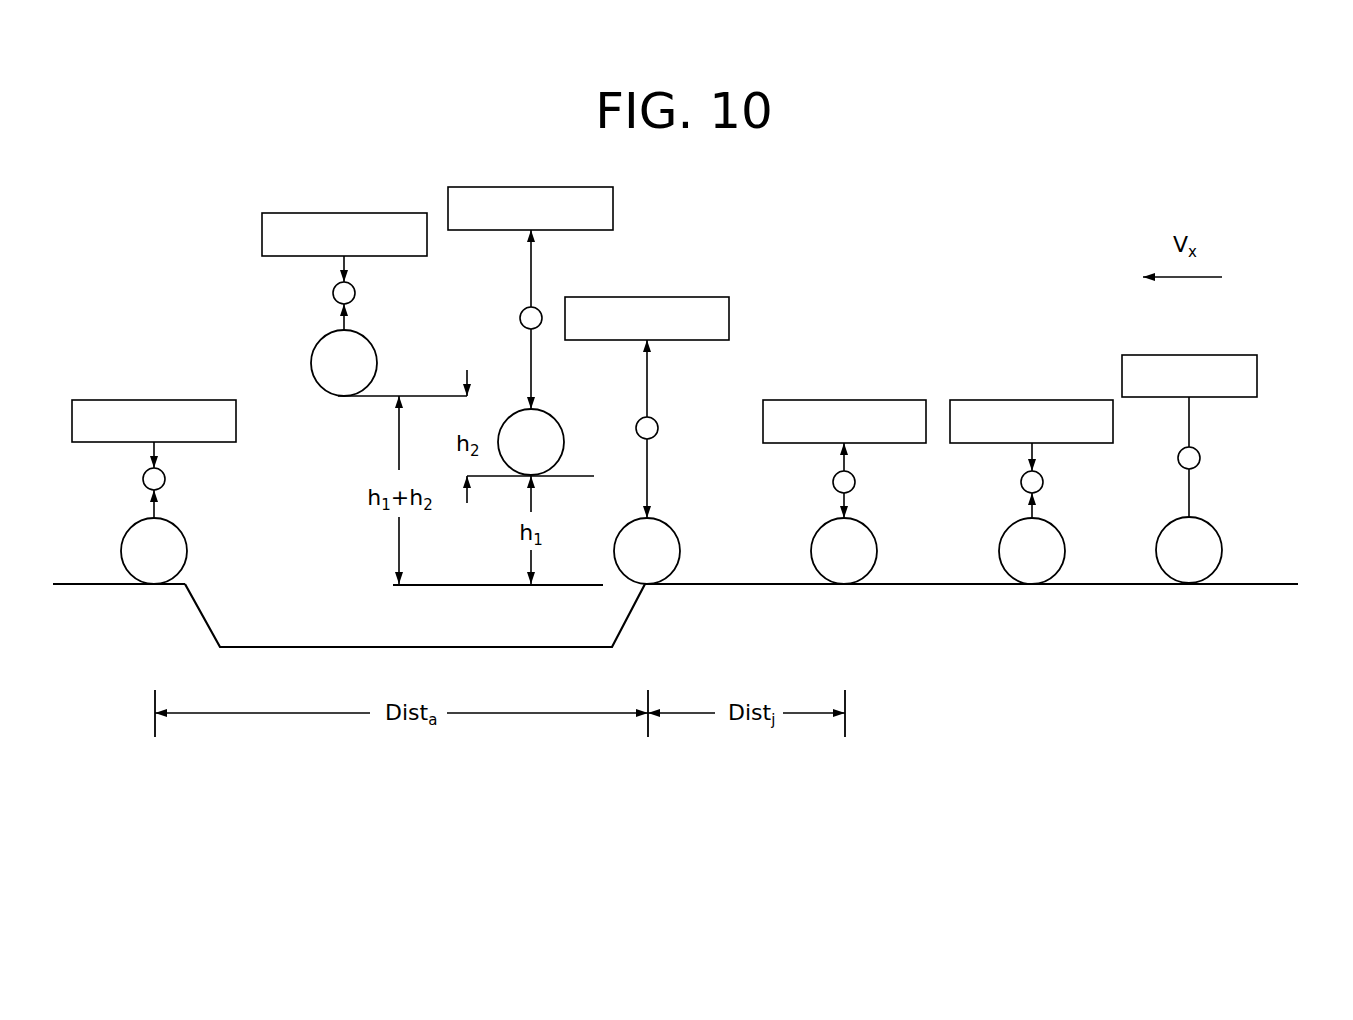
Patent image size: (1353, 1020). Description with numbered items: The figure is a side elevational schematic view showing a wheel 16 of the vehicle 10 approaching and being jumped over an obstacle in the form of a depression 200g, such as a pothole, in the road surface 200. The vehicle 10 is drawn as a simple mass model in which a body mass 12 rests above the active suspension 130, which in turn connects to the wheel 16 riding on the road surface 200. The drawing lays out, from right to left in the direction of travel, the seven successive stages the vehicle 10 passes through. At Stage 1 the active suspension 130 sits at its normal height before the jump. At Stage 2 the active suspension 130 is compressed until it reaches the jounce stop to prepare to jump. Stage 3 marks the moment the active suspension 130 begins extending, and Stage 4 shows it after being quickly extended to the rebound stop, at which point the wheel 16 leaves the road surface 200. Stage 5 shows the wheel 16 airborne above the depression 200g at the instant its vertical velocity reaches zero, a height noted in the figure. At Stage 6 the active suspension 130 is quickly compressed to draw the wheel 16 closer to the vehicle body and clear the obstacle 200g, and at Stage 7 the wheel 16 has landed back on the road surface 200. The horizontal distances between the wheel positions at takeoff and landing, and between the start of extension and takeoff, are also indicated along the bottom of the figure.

The vehicle 10 is at (1223, 430).
The vehicle body (sprung mass) 12 is at (1258, 379).
The wheel 16 is at (1236, 557).
The active suspension 130 is at (1212, 459).
The road surface 200 is at (1090, 585).
The depression 200g is at (213, 640).
The Stage 1 is at (1223, 489).
The Stage 2 is at (1031, 512).
The Stage 3 is at (844, 512).
The Stage 4 is at (647, 460).
The Stage 5 is at (530, 405).
The Stage 6 is at (344, 418).
The Stage 7 is at (154, 512).